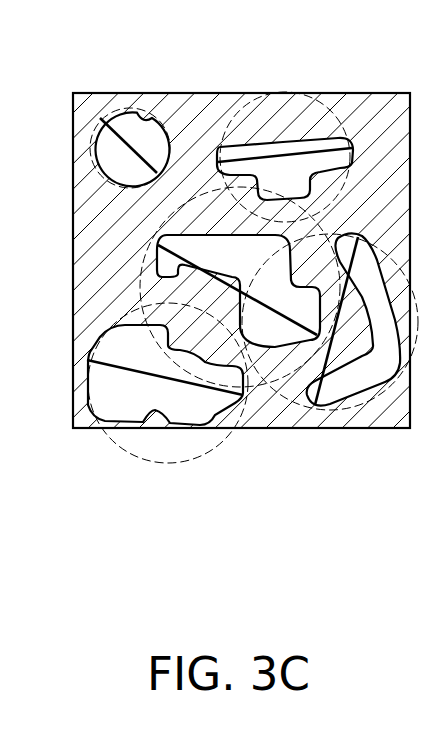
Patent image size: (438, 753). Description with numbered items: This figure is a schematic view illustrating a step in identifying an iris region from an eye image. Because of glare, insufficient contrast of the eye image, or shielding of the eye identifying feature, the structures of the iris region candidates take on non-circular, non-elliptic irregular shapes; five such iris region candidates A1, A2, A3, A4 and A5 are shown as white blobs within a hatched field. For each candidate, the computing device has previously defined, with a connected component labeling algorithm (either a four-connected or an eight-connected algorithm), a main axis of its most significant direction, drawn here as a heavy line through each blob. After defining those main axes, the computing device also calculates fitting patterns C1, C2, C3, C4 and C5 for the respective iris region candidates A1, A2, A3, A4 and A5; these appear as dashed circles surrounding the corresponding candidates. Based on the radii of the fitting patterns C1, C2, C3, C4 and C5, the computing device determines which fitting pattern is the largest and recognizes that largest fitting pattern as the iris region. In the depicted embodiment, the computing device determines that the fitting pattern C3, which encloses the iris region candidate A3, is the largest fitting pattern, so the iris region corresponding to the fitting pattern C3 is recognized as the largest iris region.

The iris region candidate A1 is at (132, 149).
The iris region candidate A2 is at (285, 169).
The iris region candidate A3 is at (238, 291).
The iris region candidate A4 is at (165, 375).
The iris region candidate A5 is at (353, 319).
The fitting pattern C1 is at (141, 108).
The fitting pattern C2 is at (281, 91).
The fitting pattern C3 is at (141, 283).
The fitting pattern C4 is at (167, 464).
The fitting pattern C5 is at (303, 410).